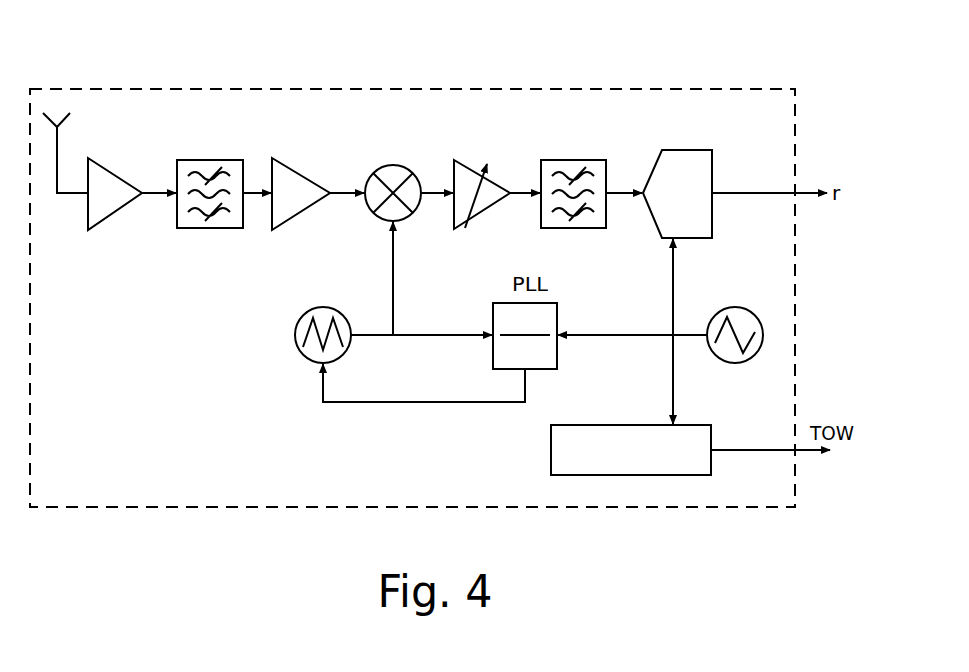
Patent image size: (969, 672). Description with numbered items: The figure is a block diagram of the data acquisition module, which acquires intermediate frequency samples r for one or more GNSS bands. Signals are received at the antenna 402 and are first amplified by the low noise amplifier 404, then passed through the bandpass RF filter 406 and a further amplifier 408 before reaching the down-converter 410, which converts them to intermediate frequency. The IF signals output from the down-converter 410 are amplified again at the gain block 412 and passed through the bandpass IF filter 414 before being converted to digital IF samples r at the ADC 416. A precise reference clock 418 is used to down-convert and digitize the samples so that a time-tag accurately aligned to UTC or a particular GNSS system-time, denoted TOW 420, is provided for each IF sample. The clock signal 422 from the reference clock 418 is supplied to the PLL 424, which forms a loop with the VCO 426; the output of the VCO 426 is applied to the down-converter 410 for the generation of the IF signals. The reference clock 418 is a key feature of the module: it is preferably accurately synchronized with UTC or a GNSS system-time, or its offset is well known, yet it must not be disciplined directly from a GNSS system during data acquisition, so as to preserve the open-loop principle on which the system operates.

The antenna 402 is at (66, 122).
The low noise amplifier 404 is at (118, 210).
The bandpass RF filter 406 is at (213, 228).
The further amplifier 408 is at (304, 214).
The down-converter 410 is at (378, 218).
The gain block 412 is at (484, 214).
The bandpass IF filter 414 is at (594, 228).
The ADC 416 is at (712, 215).
The reference clock 418 is at (735, 363).
The TOW 420 is at (572, 478).
The clock signal 422 is at (627, 335).
The PLL 424 is at (493, 352).
The VCO 426 is at (295, 335).